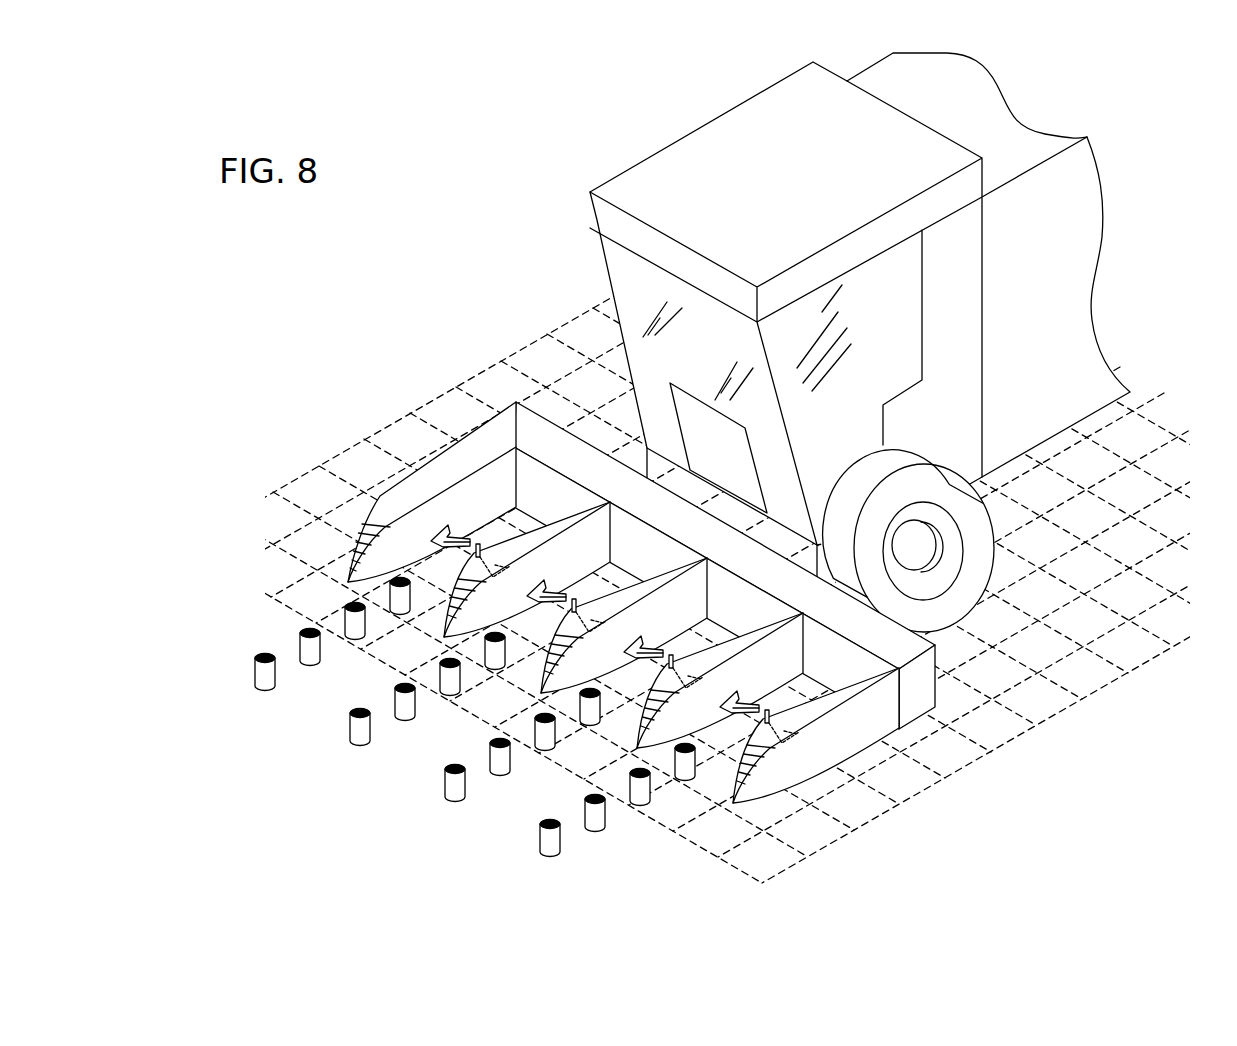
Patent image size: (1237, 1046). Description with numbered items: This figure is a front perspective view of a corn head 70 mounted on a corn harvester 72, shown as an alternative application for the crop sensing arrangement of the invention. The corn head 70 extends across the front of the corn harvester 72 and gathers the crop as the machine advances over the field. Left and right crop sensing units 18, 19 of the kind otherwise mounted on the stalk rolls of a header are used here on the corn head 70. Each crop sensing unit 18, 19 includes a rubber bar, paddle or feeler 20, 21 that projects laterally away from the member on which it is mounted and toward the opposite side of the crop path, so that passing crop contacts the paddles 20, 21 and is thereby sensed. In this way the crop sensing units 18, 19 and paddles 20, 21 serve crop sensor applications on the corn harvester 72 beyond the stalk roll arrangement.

The left crop sensing unit 18 is at (483, 550).
The right crop sensing unit 19 is at (403, 543).
The paddle 20 is at (477, 547).
The paddle 21 is at (452, 535).
The corn head 70 is at (372, 420).
The corn harvester 72 is at (680, 110).